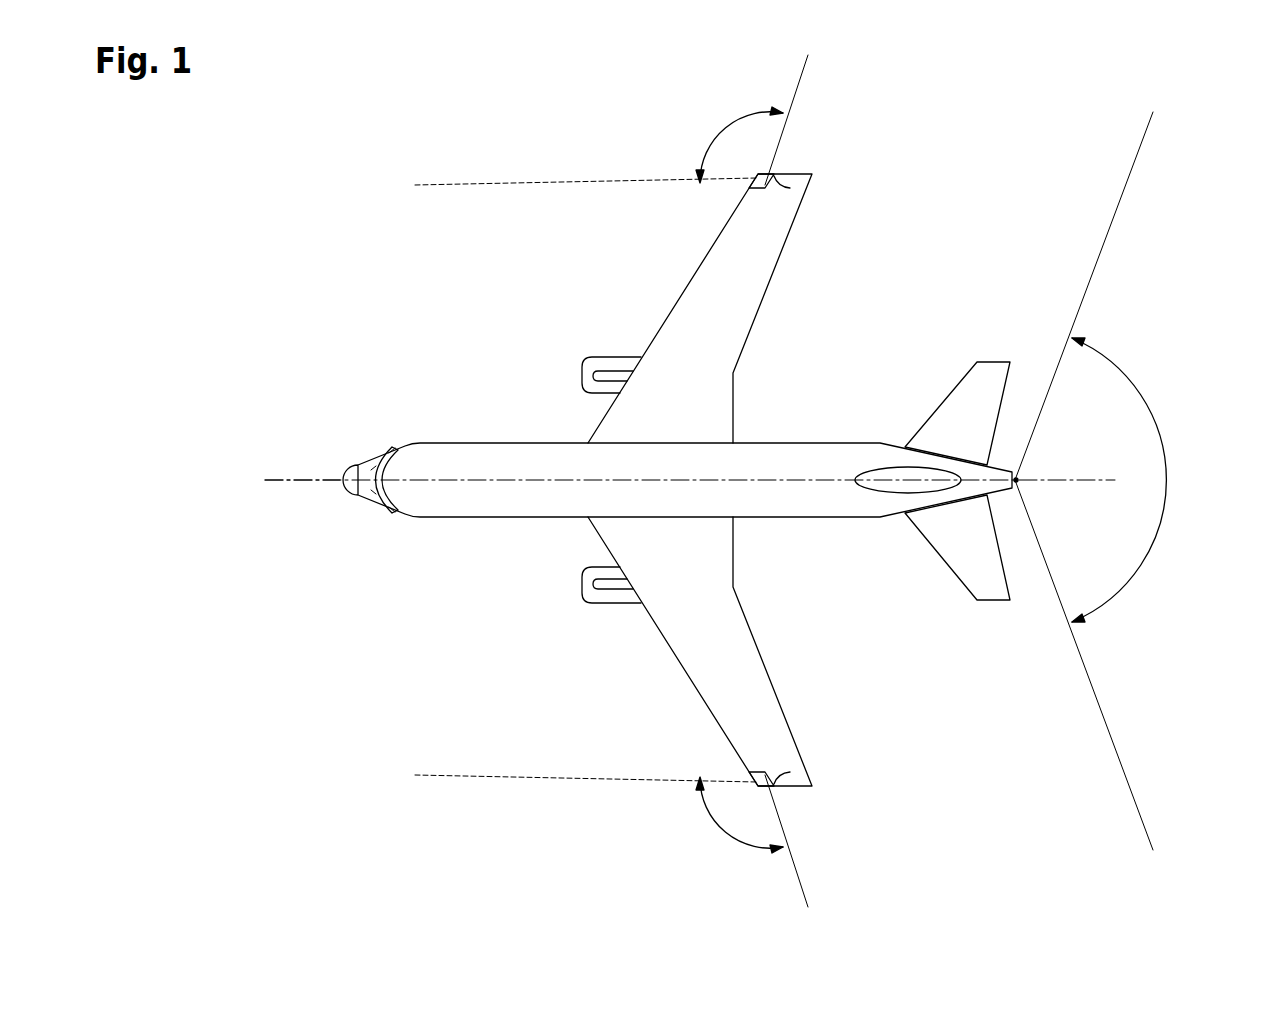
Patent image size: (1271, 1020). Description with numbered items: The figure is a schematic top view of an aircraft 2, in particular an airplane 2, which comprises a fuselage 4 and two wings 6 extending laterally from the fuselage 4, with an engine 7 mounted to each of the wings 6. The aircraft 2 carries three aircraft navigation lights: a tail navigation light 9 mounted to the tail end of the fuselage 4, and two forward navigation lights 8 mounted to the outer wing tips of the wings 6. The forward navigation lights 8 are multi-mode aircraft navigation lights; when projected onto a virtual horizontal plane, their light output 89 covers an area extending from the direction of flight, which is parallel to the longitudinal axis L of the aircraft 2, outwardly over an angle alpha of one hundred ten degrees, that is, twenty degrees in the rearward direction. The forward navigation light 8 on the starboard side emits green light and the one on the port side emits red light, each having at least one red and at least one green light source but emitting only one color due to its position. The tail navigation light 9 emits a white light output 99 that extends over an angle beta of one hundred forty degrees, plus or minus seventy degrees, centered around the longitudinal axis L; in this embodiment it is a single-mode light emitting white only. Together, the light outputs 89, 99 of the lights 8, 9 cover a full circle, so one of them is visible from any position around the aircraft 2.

The aircraft 2 is at (945, 258).
The fuselage 4 is at (812, 500).
The wings 6 is at (712, 275).
The engine 7 is at (566, 364).
The forward navigation lights 8 is at (778, 181).
The tail navigation light 9 is at (1020, 479).
The light output 89 is at (448, 200).
The light output 99 is at (1125, 151).
The longitudinal axis L is at (270, 490).